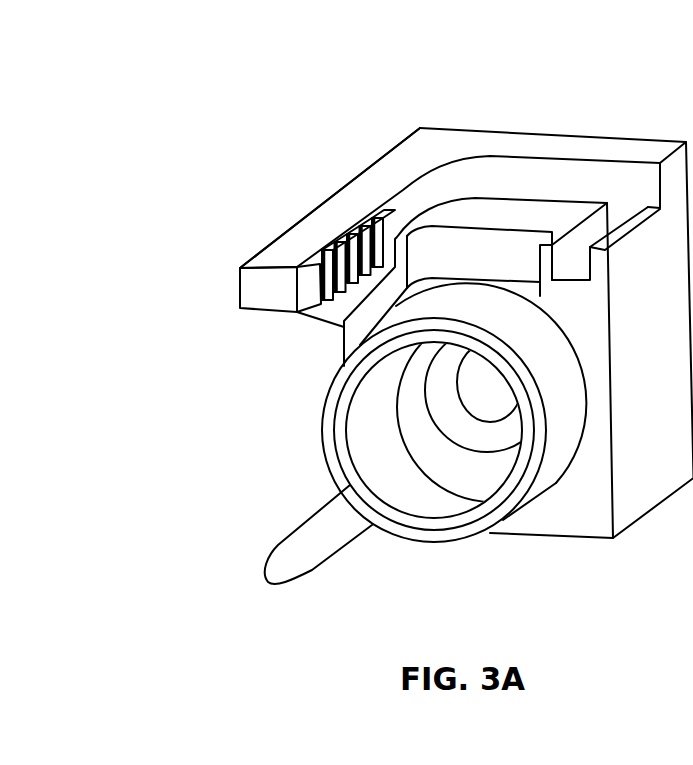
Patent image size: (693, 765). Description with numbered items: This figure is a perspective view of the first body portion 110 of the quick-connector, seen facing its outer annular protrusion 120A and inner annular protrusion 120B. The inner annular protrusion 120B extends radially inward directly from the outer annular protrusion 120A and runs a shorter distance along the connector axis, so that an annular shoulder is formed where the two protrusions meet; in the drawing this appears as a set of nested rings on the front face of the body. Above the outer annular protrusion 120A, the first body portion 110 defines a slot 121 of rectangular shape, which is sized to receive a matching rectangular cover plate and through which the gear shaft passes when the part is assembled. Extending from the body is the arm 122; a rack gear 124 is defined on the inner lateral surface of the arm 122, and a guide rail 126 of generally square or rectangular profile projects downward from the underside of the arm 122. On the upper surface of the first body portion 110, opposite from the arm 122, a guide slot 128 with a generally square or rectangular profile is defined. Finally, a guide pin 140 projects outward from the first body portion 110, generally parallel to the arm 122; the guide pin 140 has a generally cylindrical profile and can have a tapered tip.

The first body portion 110 is at (243, 98).
The outer annular protrusion 120A is at (327, 415).
The inner annular protrusion 120B is at (395, 443).
The slot 121 is at (458, 236).
The arm 122 is at (287, 207).
The rack gear 124 is at (318, 250).
The guide rail 126 is at (292, 316).
The guide slot 128 is at (575, 244).
The guide pin 140 is at (303, 540).